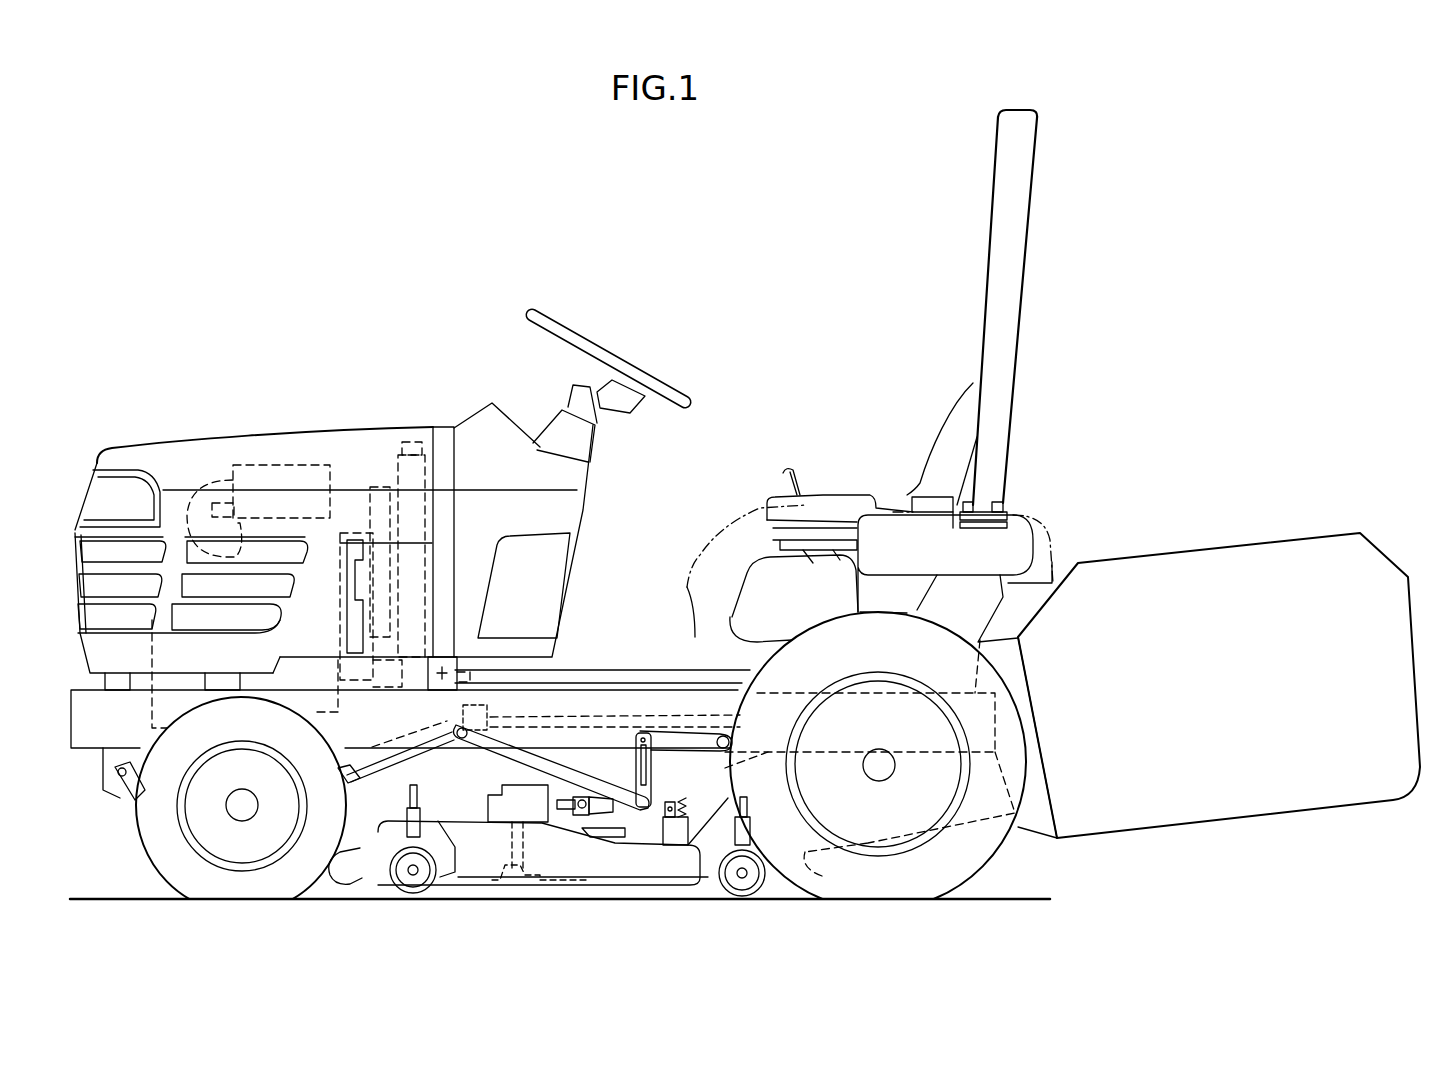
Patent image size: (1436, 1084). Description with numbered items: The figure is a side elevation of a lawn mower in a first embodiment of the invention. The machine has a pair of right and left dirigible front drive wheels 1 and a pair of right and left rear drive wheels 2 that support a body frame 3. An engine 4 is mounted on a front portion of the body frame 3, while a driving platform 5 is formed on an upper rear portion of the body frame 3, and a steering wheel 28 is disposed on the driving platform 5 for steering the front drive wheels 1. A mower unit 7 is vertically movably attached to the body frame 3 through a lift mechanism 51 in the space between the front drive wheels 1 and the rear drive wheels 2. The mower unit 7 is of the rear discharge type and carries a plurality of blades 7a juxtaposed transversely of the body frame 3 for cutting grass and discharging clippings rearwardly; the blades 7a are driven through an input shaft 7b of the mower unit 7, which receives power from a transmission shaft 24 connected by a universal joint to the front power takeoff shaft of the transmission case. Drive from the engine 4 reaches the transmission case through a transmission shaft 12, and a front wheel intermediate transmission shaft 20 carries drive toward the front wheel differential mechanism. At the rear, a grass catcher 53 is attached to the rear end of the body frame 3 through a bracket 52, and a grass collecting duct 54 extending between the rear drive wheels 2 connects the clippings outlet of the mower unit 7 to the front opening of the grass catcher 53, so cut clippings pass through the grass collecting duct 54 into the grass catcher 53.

The front drive wheels 1 is at (142, 826).
The rear drive wheels 2 is at (982, 853).
The body frame 3 is at (580, 700).
The engine 4 is at (272, 522).
The driving platform 5 is at (777, 375).
The mower unit 7 is at (466, 815).
The blades 7a is at (588, 877).
The input shaft of the mower unit 7b is at (525, 820).
The transmission shaft 12 is at (515, 673).
The front wheel intermediate transmission shaft 20 is at (655, 712).
The transmission shaft 24 is at (748, 806).
The steering wheel 28 is at (582, 333).
The lift mechanism 51 is at (612, 755).
The bracket 52 is at (1037, 823).
The grass catcher 53 is at (1215, 555).
The grass collecting duct 54 is at (822, 876).